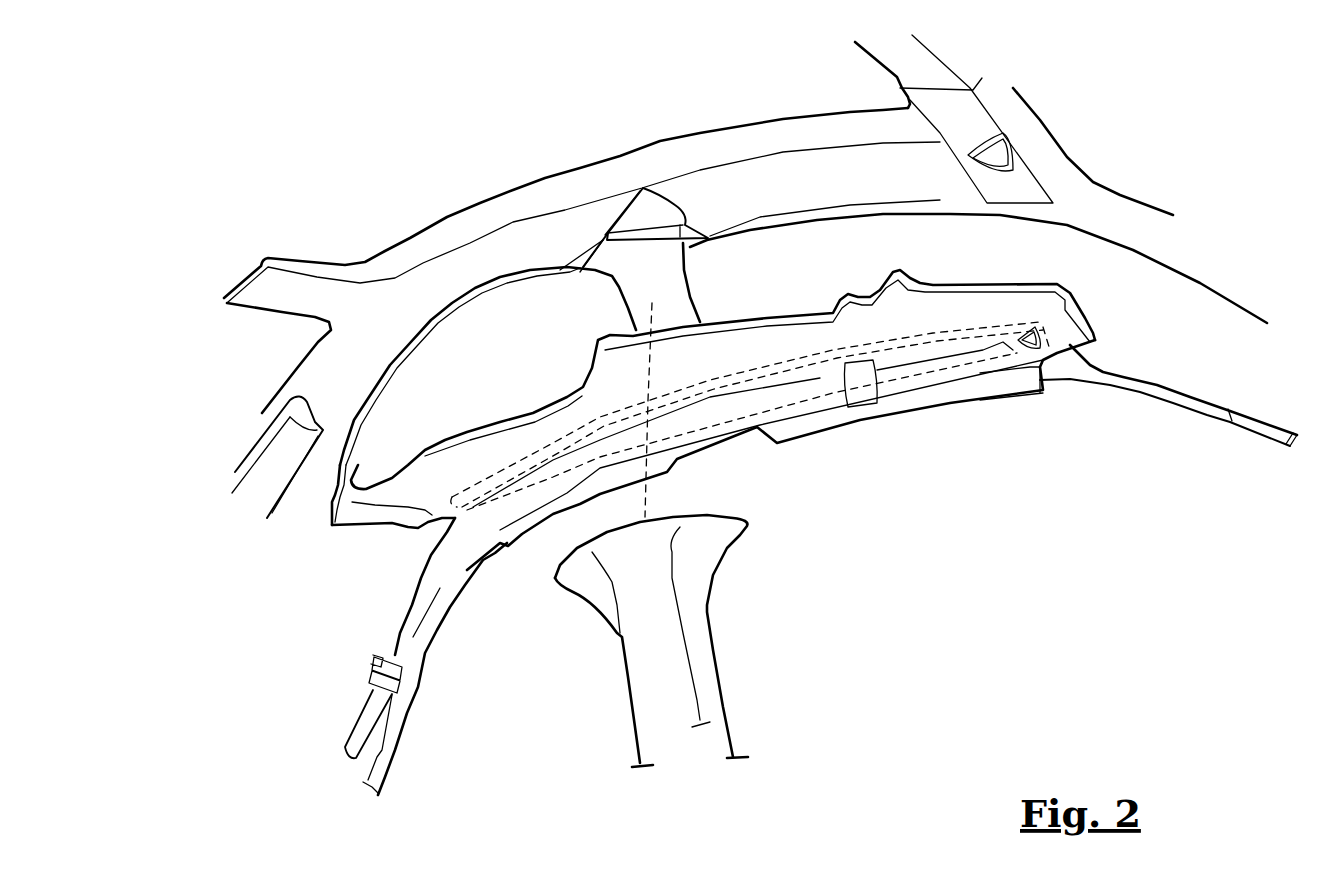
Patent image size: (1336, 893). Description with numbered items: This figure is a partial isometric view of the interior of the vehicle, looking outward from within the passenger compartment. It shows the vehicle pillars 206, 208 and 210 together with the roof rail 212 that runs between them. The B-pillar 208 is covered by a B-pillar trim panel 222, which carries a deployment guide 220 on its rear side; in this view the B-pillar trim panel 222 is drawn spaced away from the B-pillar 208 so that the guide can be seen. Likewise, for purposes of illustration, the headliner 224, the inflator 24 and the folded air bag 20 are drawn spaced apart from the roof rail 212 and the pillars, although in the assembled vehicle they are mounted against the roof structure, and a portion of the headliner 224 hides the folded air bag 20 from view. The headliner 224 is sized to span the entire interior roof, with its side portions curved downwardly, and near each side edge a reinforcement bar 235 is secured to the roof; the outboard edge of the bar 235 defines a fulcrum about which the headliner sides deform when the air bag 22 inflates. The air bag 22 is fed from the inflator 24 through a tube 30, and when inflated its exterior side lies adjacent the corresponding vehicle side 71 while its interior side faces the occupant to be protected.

The air bag 20 is at (470, 568).
The air bag 22 is at (1073, 373).
The inflator 24 is at (353, 722).
The gas fill tube 30 is at (1257, 427).
The vehicle side 71 is at (660, 175).
The pillar 206 is at (1120, 213).
The B-pillar 208 is at (673, 295).
The pillar 210 is at (315, 370).
The roof rail 212 is at (408, 240).
The deployment guide 220 is at (630, 241).
The B-pillar trim panel 222 is at (697, 628).
The headliner 224 is at (933, 310).
The reinforcement bar 235 is at (920, 357).